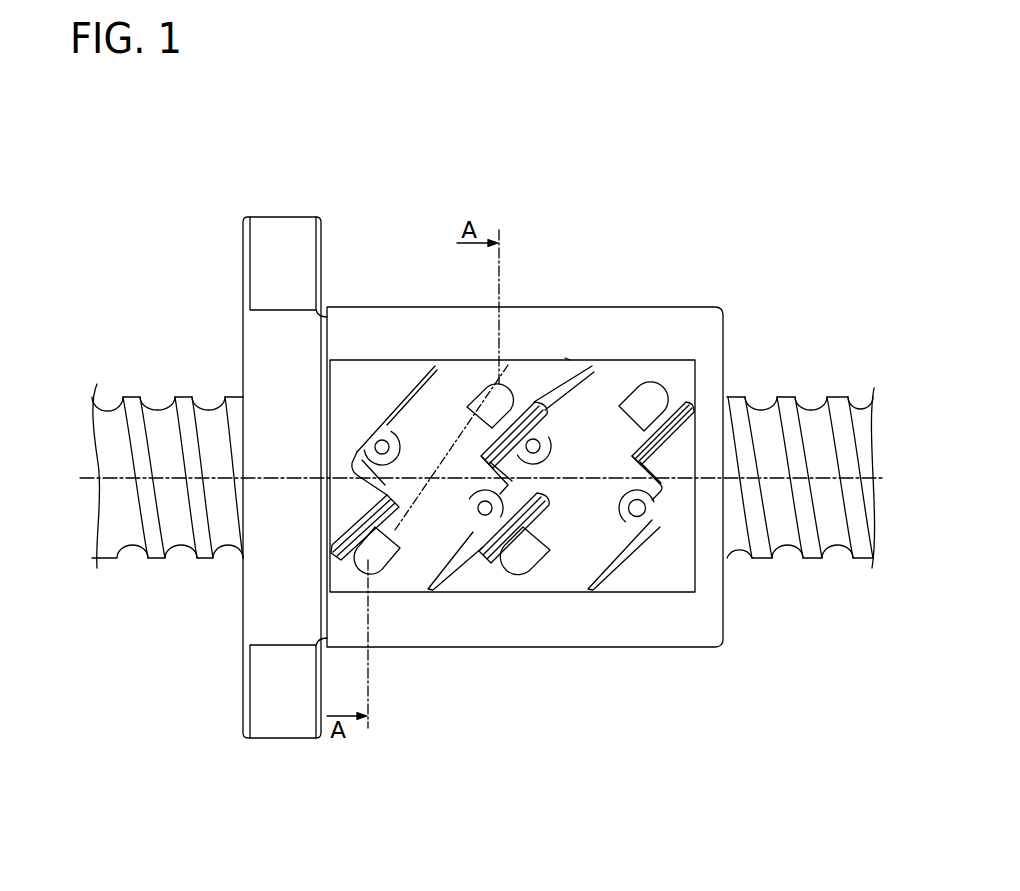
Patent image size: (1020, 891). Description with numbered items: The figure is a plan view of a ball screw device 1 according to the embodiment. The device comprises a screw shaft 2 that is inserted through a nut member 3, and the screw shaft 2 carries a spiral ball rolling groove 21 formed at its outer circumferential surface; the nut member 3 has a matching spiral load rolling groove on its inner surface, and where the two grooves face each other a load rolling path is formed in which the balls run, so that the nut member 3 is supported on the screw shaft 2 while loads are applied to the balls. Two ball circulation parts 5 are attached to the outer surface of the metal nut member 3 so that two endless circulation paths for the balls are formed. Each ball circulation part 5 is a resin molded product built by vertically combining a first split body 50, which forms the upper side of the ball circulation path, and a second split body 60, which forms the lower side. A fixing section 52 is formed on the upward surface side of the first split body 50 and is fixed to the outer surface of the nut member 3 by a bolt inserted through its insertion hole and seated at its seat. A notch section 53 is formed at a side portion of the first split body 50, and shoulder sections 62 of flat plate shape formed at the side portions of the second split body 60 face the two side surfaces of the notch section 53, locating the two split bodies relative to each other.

The ball screw device 1 is at (190, 236).
The screw shaft 2 is at (130, 395).
The ball rolling groove 21 is at (204, 397).
The nut member 3 is at (647, 307).
The ball circulation part 5 is at (418, 353).
The first split body 50 is at (375, 403).
The fixing section 52 is at (358, 425).
The notch section 53 is at (351, 484).
The second split body 60 is at (335, 529).
The shoulder section 62 is at (572, 351).